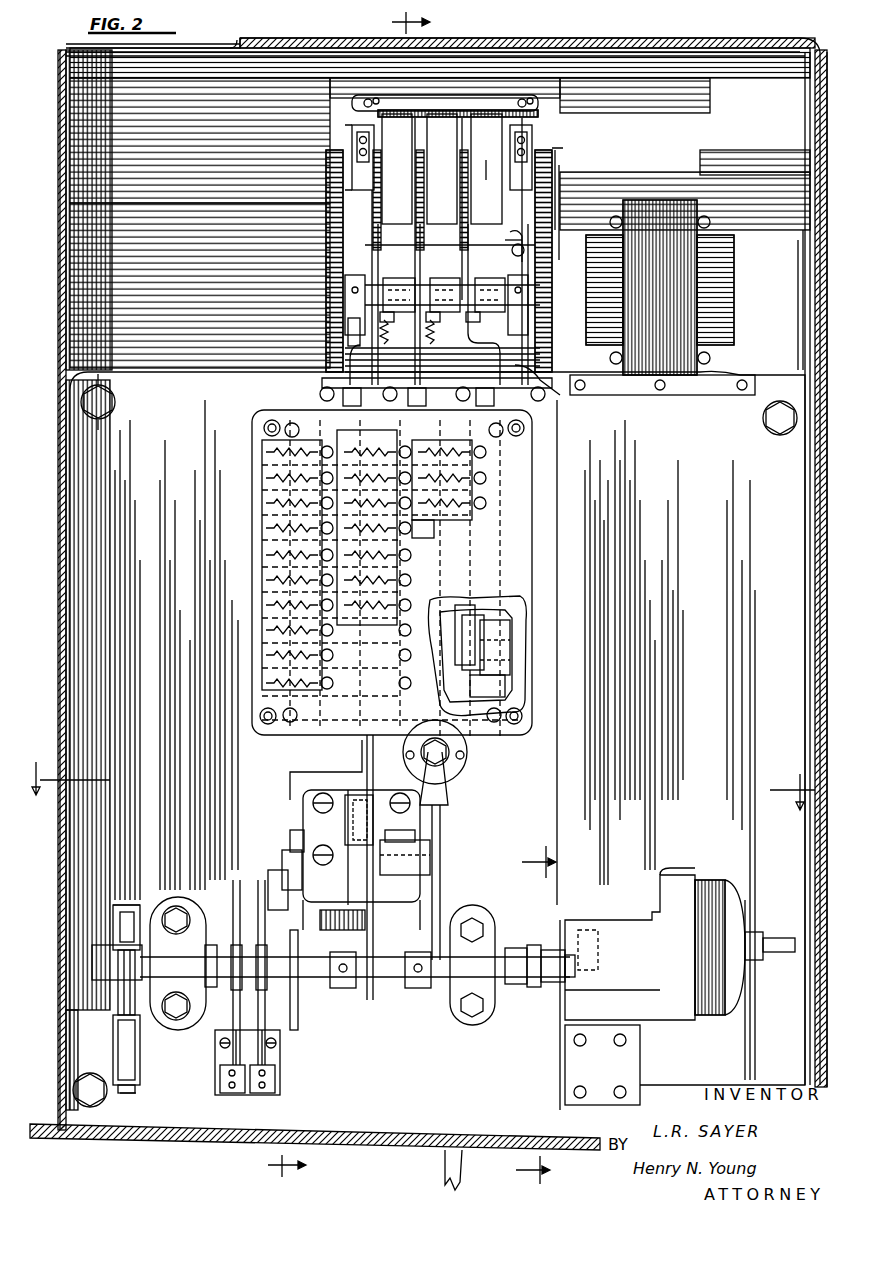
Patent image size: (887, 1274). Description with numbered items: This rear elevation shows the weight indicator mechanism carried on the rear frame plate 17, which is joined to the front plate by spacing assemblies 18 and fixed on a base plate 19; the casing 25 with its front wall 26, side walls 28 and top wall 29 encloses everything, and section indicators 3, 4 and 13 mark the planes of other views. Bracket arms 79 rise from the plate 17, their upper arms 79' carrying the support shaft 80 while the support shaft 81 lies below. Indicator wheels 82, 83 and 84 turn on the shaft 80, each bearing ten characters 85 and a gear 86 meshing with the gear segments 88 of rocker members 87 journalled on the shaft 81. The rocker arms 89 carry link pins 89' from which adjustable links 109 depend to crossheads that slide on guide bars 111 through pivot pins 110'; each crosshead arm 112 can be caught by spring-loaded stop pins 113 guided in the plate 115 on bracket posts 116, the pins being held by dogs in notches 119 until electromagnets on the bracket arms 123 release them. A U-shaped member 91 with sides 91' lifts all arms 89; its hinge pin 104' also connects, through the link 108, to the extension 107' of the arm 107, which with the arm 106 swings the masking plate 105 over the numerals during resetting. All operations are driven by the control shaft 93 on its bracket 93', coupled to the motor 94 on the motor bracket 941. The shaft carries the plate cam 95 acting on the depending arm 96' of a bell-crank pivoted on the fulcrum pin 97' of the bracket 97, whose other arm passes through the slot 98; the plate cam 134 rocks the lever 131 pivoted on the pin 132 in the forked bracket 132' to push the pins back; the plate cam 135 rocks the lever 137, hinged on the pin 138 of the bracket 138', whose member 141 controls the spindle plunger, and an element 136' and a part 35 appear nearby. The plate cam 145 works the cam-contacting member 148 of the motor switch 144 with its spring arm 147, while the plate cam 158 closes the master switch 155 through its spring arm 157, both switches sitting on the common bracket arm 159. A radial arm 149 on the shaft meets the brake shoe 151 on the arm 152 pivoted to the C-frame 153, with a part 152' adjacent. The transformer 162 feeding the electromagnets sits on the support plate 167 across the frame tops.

The section line 3- 3 is at (528, 1015).
The section line 4- 4 is at (341, 594).
The section line 13- 13 is at (420, 776).
The rear frame plate 17 is at (726, 437).
The spacing assemblies 18 is at (116, 400).
The base plate 19 is at (362, 1136).
The casing 25 is at (792, 42).
The front wall 26 is at (200, 306).
The side walls 28 is at (92, 276).
The top wall 29 is at (510, 42).
The link arm 35 is at (470, 768).
The bracket arms 79 is at (315, 261).
The upper arms 79' is at (567, 253).
The support shaft 80 is at (563, 160).
The support shaft 81 is at (344, 300).
The indicator wheel 82 is at (396, 114).
The indicator wheel 83 is at (440, 114).
The indicator wheel 84 is at (484, 114).
The characters 85 is at (488, 180).
The gears 86 is at (366, 186).
The rocker members 87 is at (356, 270).
The gear segments 88 is at (362, 246).
The arms 89 is at (412, 342).
The link pins 89' is at (552, 393).
The U-shaped member 91 is at (381, 329).
The sides 91' is at (353, 324).
The control shaft 93 is at (331, 944).
The bracket 93' is at (472, 965).
The electric motor 94 is at (656, 970).
The motor bracket 941 is at (574, 920).
The plate cam 95 is at (300, 1025).
The depending arm 96' is at (360, 923).
The bracket arm 97 is at (287, 855).
The fulcrum pin 97' is at (269, 875).
The slot 98 is at (290, 838).
The hinge pin 104' is at (456, 365).
The masking plate 105 is at (540, 110).
The arm 106 is at (350, 136).
The arm 107 is at (487, 125).
The extension 107' is at (550, 236).
The link 108 is at (525, 266).
The links 109 is at (320, 396).
The pivot pin 110' is at (526, 647).
The guide bar 111 is at (505, 604).
The arm 112 is at (510, 688).
The stop pin members 113 is at (488, 490).
The plate member 115 is at (434, 538).
The bracket posts 116 is at (264, 426).
The notches 119 is at (484, 634).
The bracket arms 123 is at (262, 524).
The lever 131 is at (380, 768).
The pin 132 is at (337, 821).
The forked bracket 132' is at (333, 825).
The plate cam 134 is at (350, 988).
The plate cam 135 is at (470, 1000).
The shaft collar 136' is at (409, 986).
The lever 137 is at (442, 894).
The pivot pin 138 is at (436, 852).
The bracket 138' is at (421, 820).
The member 141 is at (468, 758).
The switch 144 is at (226, 1022).
The plate cam 145 is at (200, 900).
The spring arm 147 is at (232, 1055).
The cam-contacting member 148 is at (222, 945).
The radial arm 149 is at (118, 996).
The brake shoe 151 is at (112, 932).
The arm 152 is at (149, 1072).
The terminal 152' is at (157, 1098).
The C-frame 153 is at (112, 1050).
The master switch 155 is at (278, 1030).
The spring arm 157 is at (280, 1068).
The plate cam 158 is at (262, 880).
The bracket arm 159 is at (282, 1092).
The transformer 162 is at (734, 296).
The support plate 167 is at (726, 386).